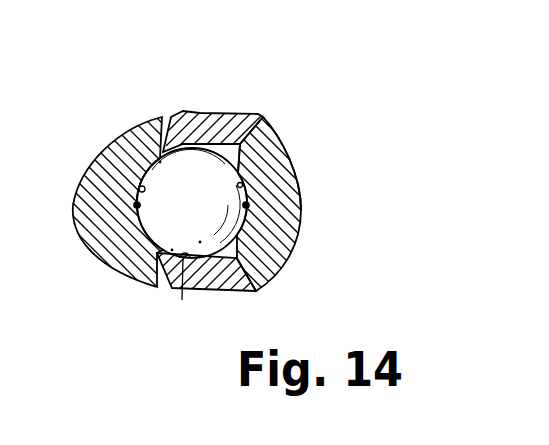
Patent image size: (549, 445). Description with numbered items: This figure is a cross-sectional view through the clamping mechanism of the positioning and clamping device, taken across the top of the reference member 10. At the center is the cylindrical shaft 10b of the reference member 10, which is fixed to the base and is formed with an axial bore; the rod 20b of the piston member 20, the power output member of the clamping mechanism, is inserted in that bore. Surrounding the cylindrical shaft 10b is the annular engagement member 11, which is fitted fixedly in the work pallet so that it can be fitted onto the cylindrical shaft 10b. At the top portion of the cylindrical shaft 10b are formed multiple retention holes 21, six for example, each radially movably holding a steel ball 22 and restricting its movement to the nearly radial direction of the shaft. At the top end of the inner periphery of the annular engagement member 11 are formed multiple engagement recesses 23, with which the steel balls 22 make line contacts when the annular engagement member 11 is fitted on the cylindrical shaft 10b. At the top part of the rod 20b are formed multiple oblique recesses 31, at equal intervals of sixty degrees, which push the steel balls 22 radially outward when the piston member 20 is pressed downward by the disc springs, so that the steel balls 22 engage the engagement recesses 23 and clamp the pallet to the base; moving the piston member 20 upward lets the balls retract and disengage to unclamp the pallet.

The reference member 10 is at (222, 283).
The cylindrical shaft 10b is at (205, 123).
The annular engagement member 11 is at (87, 213).
The piston member 20 is at (291, 249).
The rod 20b is at (273, 167).
The retention hole 21 is at (182, 300).
The steel ball 22 is at (237, 156).
The engagement recess 23 is at (140, 190).
The oblique recess 31 is at (247, 203).